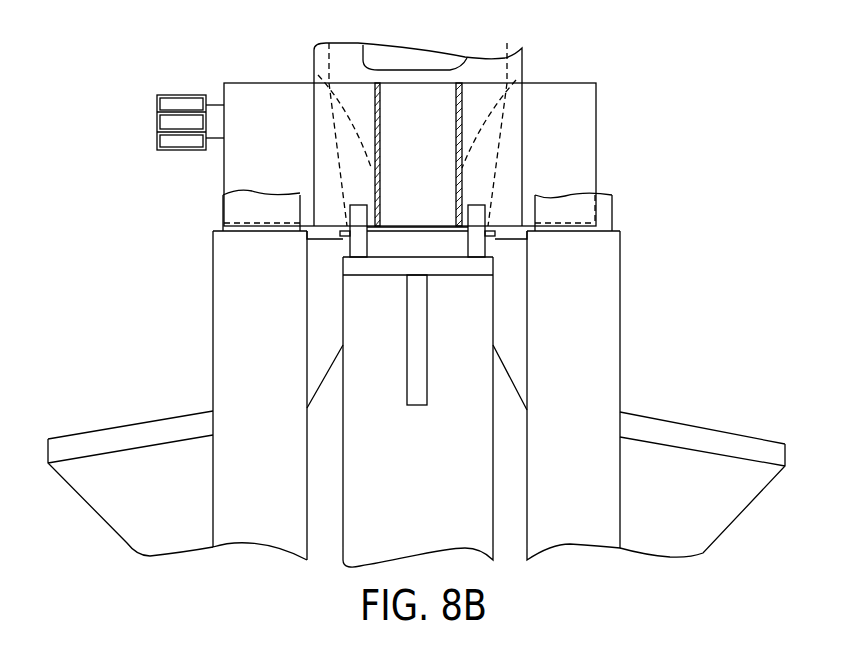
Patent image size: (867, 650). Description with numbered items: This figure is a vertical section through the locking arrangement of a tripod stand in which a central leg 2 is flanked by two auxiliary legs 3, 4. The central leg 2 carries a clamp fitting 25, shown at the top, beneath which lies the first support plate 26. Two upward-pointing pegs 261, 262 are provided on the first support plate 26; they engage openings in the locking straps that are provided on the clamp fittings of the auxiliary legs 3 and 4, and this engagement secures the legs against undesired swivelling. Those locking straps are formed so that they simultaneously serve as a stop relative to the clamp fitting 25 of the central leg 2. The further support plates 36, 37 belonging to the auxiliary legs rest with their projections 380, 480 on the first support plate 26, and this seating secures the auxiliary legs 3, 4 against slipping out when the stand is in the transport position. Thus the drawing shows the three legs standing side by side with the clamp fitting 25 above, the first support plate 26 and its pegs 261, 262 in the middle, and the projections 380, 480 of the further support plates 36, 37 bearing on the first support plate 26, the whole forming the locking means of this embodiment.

The clamp fitting 25 is at (462, 100).
The peg 262 is at (357, 205).
The peg 261 is at (478, 205).
The projection 480 is at (345, 247).
The projection 380 is at (487, 247).
The first support plate 26 is at (407, 265).
The central leg 2 is at (421, 484).
The auxiliary leg 4 is at (261, 464).
The auxiliary leg 3 is at (568, 464).
The left gap 37 is at (336, 312).
The further support plate 36 is at (516, 312).